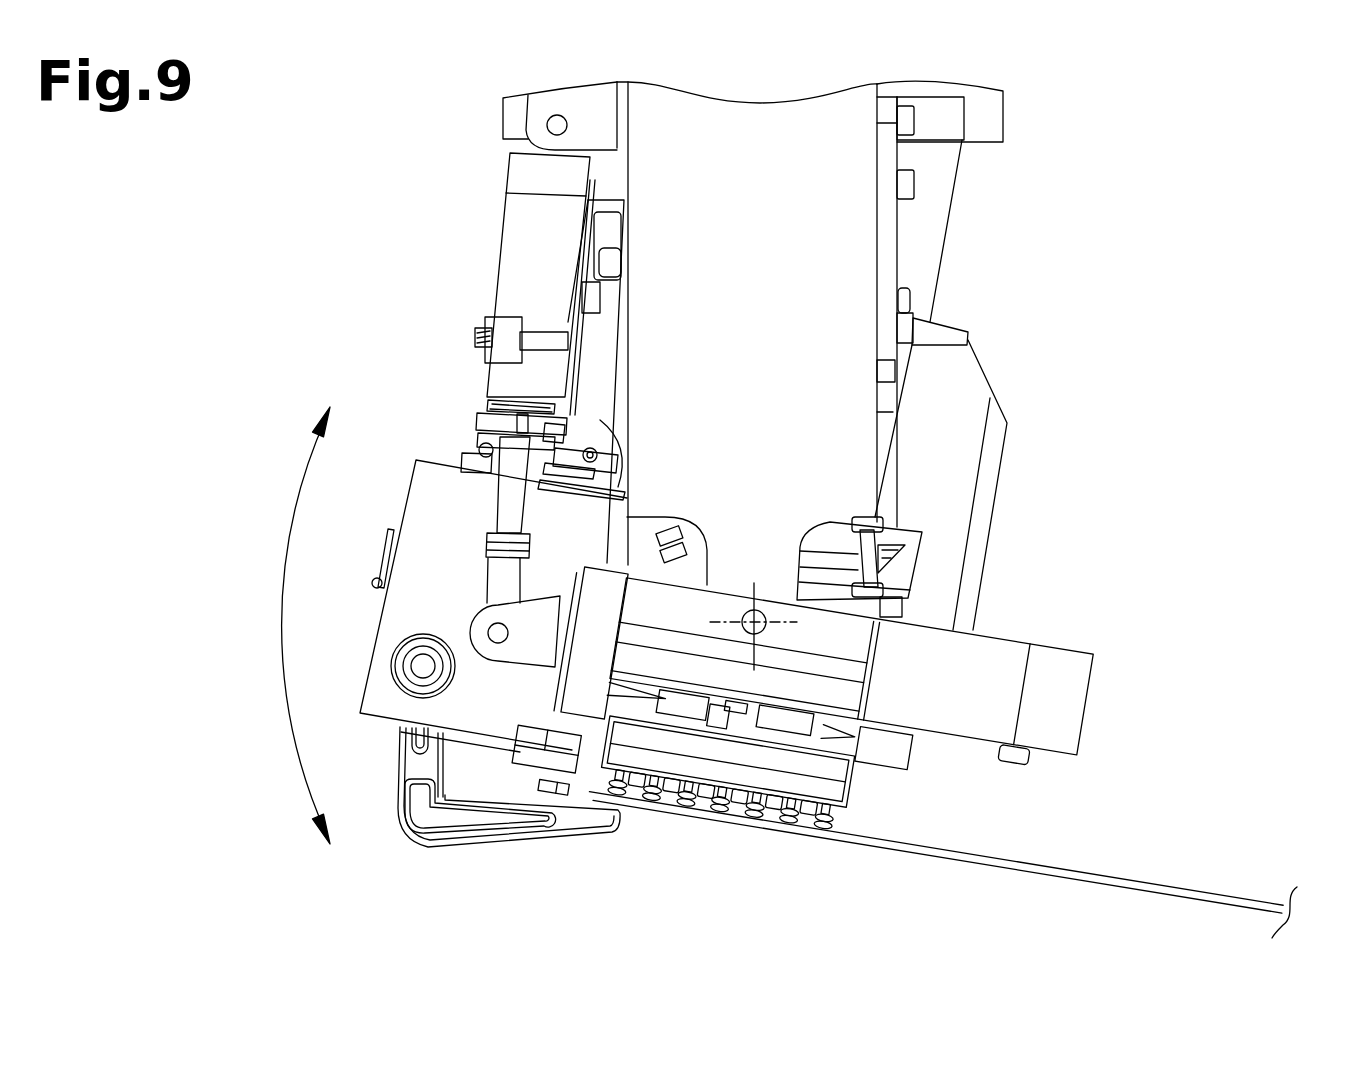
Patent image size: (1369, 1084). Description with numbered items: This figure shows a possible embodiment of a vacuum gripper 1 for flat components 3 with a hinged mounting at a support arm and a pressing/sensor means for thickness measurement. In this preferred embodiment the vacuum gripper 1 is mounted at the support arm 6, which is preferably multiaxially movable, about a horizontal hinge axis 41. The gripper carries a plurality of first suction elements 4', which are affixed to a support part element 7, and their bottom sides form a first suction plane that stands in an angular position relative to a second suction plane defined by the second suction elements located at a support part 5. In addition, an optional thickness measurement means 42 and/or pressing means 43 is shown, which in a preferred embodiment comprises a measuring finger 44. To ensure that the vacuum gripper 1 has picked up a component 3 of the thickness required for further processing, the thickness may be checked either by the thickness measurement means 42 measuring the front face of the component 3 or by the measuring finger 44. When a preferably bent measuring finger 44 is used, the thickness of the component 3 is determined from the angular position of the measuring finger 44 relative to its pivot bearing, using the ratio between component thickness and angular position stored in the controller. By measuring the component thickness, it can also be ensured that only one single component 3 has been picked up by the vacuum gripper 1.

The vacuum gripper 1 is at (1328, 155).
The flat component 3 is at (954, 798).
The first suction elements 4' is at (836, 810).
The support part 5 is at (831, 638).
The support arm 6 is at (755, 355).
The support part element 7 is at (804, 767).
The horizontal hinge axis 41 is at (787, 536).
The thickness measurement means 42 is at (511, 861).
The pressing means 43 is at (702, 867).
The measuring finger 44 is at (515, 838).